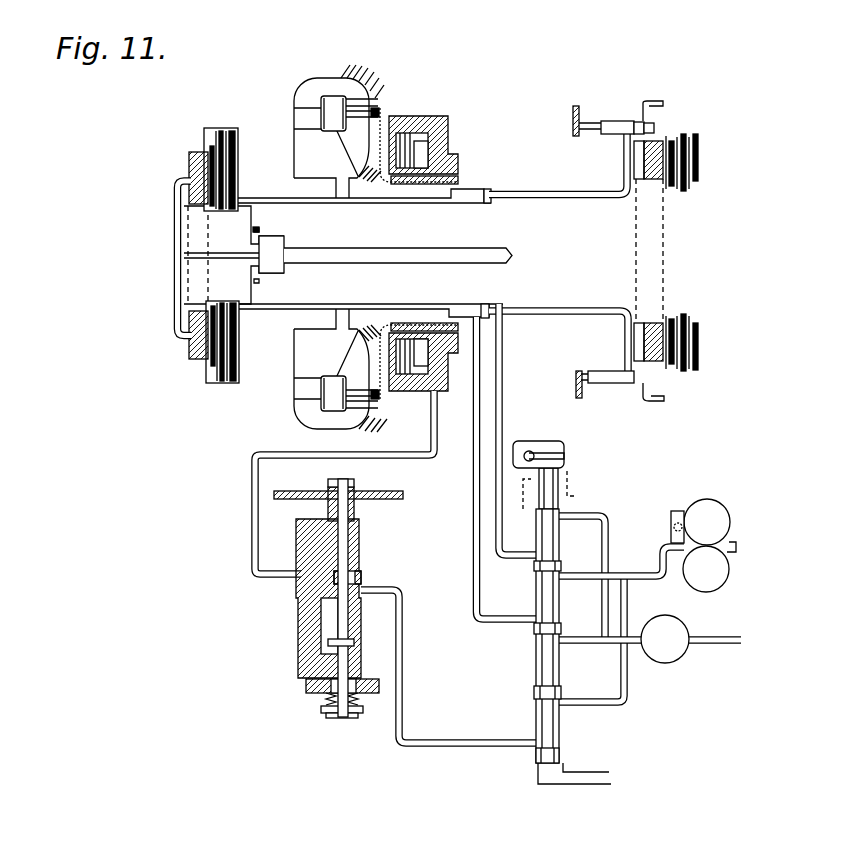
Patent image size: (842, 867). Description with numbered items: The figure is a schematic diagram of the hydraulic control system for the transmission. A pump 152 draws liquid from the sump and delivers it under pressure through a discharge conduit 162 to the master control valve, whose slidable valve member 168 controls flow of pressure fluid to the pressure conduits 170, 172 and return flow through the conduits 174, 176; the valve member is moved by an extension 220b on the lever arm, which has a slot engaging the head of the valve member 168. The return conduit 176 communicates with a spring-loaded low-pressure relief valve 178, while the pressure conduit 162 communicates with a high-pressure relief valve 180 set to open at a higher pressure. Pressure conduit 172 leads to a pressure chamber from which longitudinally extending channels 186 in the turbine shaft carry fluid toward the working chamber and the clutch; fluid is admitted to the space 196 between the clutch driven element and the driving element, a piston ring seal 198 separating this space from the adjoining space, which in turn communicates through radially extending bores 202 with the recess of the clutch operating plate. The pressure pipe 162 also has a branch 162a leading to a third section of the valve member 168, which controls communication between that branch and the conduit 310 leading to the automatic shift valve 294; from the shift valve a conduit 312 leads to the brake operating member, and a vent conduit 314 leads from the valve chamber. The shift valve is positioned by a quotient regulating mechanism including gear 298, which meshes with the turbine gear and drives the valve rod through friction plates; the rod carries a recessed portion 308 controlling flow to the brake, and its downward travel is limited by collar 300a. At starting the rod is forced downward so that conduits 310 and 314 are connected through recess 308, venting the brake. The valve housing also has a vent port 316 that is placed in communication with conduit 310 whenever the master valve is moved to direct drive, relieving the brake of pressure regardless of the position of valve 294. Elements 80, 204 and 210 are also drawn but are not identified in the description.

The clutch pack 80 is at (187, 161).
The radially extending bores 202 is at (172, 226).
The piston ring seal 198 is at (254, 229).
The rod 204 is at (390, 250).
The gear 298 is at (423, 392).
The longitudinally extending channels 186 is at (556, 200).
The clutch actuator 210 is at (625, 338).
The pressure conduit 170 is at (492, 459).
The pressure conduit 172 is at (472, 509).
The conduit 312 is at (252, 472).
The vent conduit 314 is at (294, 594).
The automatic shift valve 294 is at (323, 624).
The space 196 is at (305, 488).
The recessed portion 308 is at (357, 572).
The collar 300a is at (368, 632).
The conduit 310 is at (468, 736).
The return conduit 176 is at (590, 509).
The branch 162a is at (570, 697).
The discharge conduit 162 is at (628, 570).
The conduit 174 is at (577, 635).
The pressure relief valve 178 is at (667, 656).
The pump 152 is at (716, 510).
The pressure relief valve 180 is at (678, 516).
The valve member 168 is at (548, 483).
The extension 220b is at (525, 437).
The vent port 316 is at (563, 776).